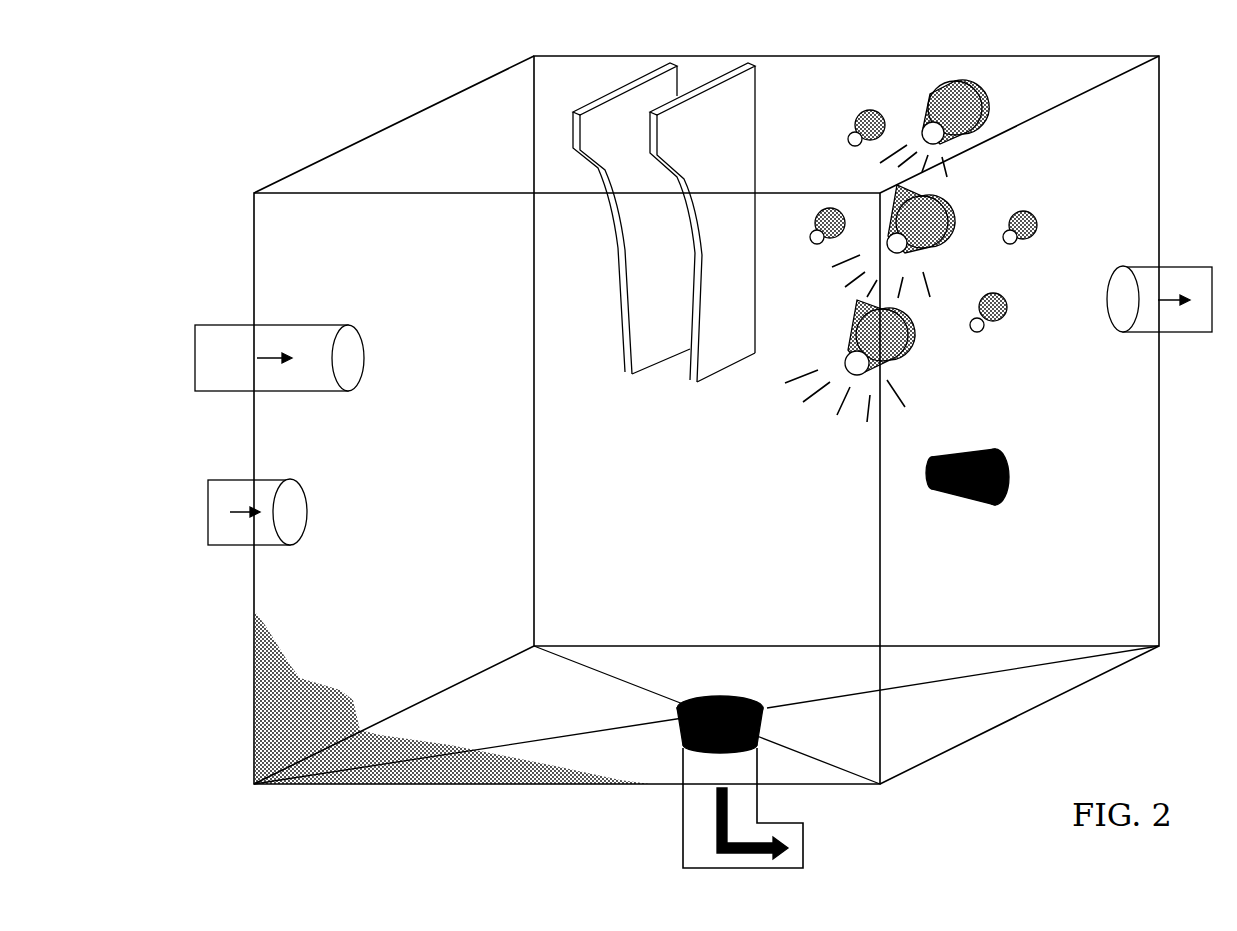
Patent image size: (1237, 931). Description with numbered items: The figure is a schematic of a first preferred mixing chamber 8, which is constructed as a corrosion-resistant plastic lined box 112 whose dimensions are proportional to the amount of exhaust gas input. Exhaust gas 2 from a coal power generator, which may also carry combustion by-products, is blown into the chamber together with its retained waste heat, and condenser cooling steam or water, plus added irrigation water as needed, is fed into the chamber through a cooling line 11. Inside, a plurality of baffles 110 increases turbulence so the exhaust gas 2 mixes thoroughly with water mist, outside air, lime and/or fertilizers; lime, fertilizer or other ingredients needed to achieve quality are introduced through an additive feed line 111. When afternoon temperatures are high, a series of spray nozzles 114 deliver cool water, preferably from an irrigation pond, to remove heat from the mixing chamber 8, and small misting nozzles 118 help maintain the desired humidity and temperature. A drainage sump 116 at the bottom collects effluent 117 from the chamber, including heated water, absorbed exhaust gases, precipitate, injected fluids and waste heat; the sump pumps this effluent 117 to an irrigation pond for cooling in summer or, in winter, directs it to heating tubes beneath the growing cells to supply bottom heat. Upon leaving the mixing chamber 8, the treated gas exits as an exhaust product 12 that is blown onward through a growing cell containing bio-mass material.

The mixing chamber 8 is at (443, 92).
The baffles 110 is at (633, 68).
The spray nozzles 114 is at (985, 72).
The misting nozzles 118 is at (858, 115).
The additive feed line 111 is at (968, 507).
The cooling line 11 is at (223, 323).
The exhaust gas 2 is at (230, 545).
The exhaust product 12 is at (1178, 262).
The drainage sump 116 is at (747, 697).
The effluent 117 is at (670, 837).
The plastic lined box 112 is at (377, 788).